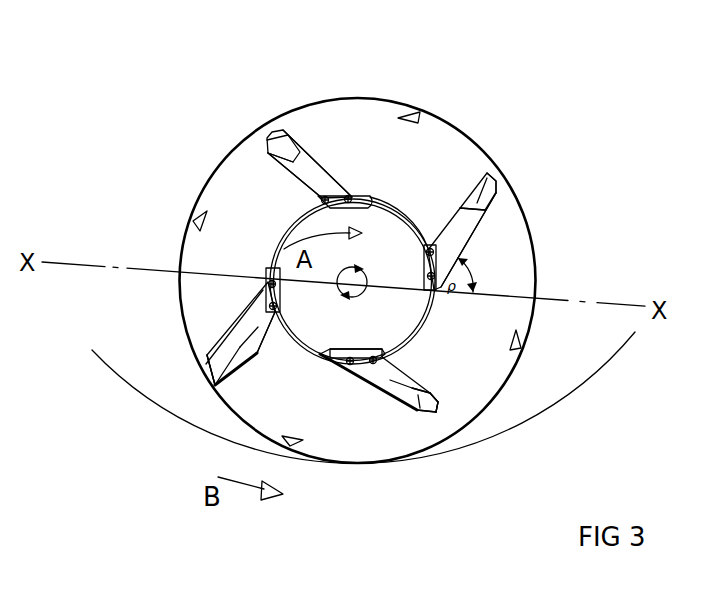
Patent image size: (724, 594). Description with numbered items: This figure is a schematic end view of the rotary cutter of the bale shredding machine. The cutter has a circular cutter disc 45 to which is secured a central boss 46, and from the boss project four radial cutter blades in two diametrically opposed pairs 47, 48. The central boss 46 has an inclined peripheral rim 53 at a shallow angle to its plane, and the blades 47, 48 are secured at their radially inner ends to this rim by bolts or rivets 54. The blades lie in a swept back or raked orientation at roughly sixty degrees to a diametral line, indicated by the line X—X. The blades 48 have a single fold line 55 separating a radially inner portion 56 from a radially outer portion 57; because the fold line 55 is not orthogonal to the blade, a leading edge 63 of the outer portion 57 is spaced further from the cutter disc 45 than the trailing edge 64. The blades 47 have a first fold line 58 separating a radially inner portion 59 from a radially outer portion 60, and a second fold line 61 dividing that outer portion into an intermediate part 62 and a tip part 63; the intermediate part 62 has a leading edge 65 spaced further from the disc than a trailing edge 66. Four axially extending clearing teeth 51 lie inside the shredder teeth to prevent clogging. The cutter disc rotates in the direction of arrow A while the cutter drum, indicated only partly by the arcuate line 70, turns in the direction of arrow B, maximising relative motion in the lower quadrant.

The cutter disc 45 is at (236, 172).
The central boss 46 is at (412, 318).
The double cranked cutter blade 47 is at (339, 169).
The single cranked cutter blade 48 is at (470, 250).
The clearing teeth 51 is at (193, 218).
The inclined peripheral rim 53 is at (393, 203).
The bolts or rivets 54 is at (318, 198).
The fold line 55 is at (463, 235).
The radially inner portion 56 is at (260, 325).
The radially outer portion 57 is at (207, 362).
The first fold line 58 is at (290, 180).
The radially inner portion 59 is at (388, 375).
The radially outer portion 60 is at (412, 422).
The second fold line 61 is at (437, 413).
The intermediate part 62 is at (433, 398).
The tip part 63 is at (493, 195).
The trailing edge 64 is at (468, 178).
The leading edge 65 is at (305, 130).
The trailing edge 66 is at (280, 172).
The arcuate line 70 is at (130, 383).